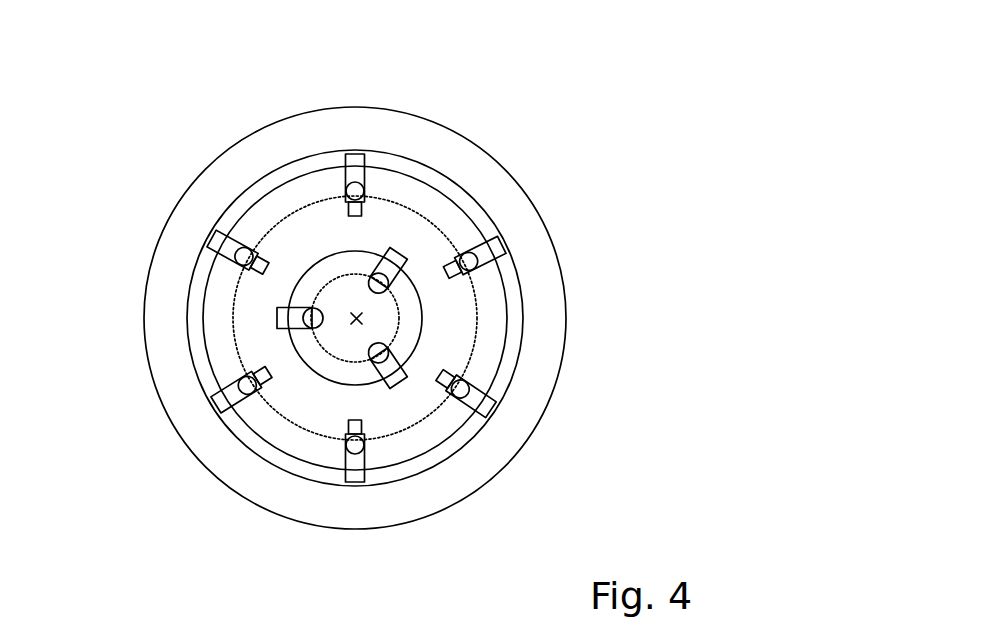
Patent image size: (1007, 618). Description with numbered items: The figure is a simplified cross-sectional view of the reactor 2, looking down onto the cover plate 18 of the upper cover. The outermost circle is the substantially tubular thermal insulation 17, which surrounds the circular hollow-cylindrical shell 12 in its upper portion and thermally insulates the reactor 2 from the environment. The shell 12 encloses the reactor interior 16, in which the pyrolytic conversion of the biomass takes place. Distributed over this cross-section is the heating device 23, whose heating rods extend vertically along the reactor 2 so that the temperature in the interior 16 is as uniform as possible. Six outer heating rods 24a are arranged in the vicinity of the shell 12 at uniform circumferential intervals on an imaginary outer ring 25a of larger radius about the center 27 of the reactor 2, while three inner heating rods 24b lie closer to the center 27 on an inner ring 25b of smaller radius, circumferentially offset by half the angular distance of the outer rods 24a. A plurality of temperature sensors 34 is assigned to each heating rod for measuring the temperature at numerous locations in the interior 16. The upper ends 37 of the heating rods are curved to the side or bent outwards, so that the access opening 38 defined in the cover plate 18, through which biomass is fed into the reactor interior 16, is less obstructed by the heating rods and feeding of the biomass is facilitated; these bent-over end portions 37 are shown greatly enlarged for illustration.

The reactor 2 is at (140, 106).
The shell 12 is at (517, 316).
The reactor interior 16 is at (253, 333).
The thermal insulation 17 is at (535, 250).
The cover plate 18 is at (317, 367).
The heating device 23 is at (230, 222).
The outer heating rods 24a is at (450, 250).
The inner heating rods 24b is at (393, 265).
The outer ring 25a is at (343, 272).
The inner ring 25b is at (287, 207).
The center 27 is at (357, 324).
The temperature sensors 34 is at (255, 262).
The upper ends 37 is at (354, 173).
The access opening 38 is at (322, 392).